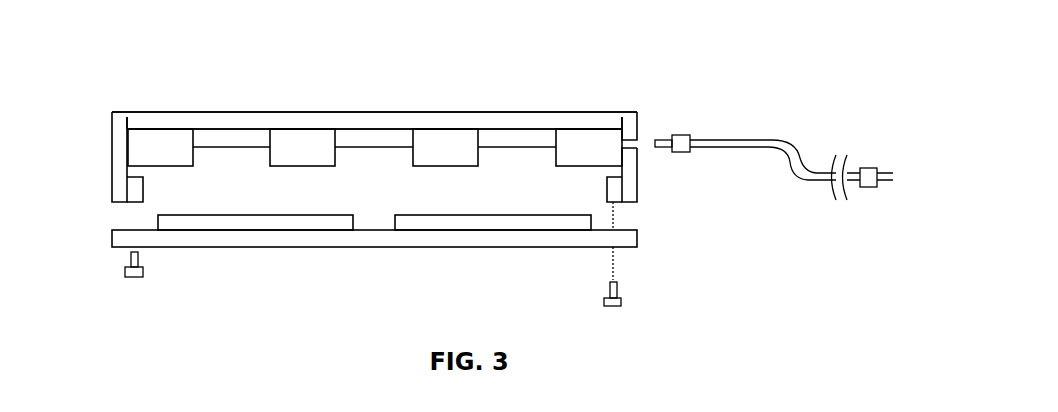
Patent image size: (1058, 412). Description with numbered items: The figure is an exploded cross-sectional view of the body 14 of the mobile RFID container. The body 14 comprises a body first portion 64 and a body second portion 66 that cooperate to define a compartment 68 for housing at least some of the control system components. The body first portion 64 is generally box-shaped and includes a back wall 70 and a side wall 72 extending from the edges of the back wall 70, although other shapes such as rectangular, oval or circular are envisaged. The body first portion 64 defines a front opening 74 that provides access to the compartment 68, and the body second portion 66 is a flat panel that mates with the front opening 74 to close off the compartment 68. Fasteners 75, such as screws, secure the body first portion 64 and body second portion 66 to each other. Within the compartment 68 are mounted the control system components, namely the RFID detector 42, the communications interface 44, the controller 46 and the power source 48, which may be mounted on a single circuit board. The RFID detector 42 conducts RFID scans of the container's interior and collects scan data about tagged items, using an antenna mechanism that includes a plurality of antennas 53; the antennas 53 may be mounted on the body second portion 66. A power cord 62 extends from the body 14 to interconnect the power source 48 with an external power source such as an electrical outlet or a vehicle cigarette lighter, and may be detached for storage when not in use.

The body 14 is at (566, 78).
The RFID detector 42 is at (317, 215).
The communications interface 44 is at (146, 158).
The controller 46 is at (288, 158).
The power source 48 is at (575, 158).
The antennas 53 is at (275, 222).
The power cord 62 is at (730, 140).
The body first portion 64 is at (410, 112).
The body second portion 66 is at (205, 247).
The compartment 68 is at (240, 161).
The back wall 70 is at (210, 112).
The side wall 72 is at (112, 157).
The front opening 74 is at (135, 204).
The fasteners 75 is at (127, 262).